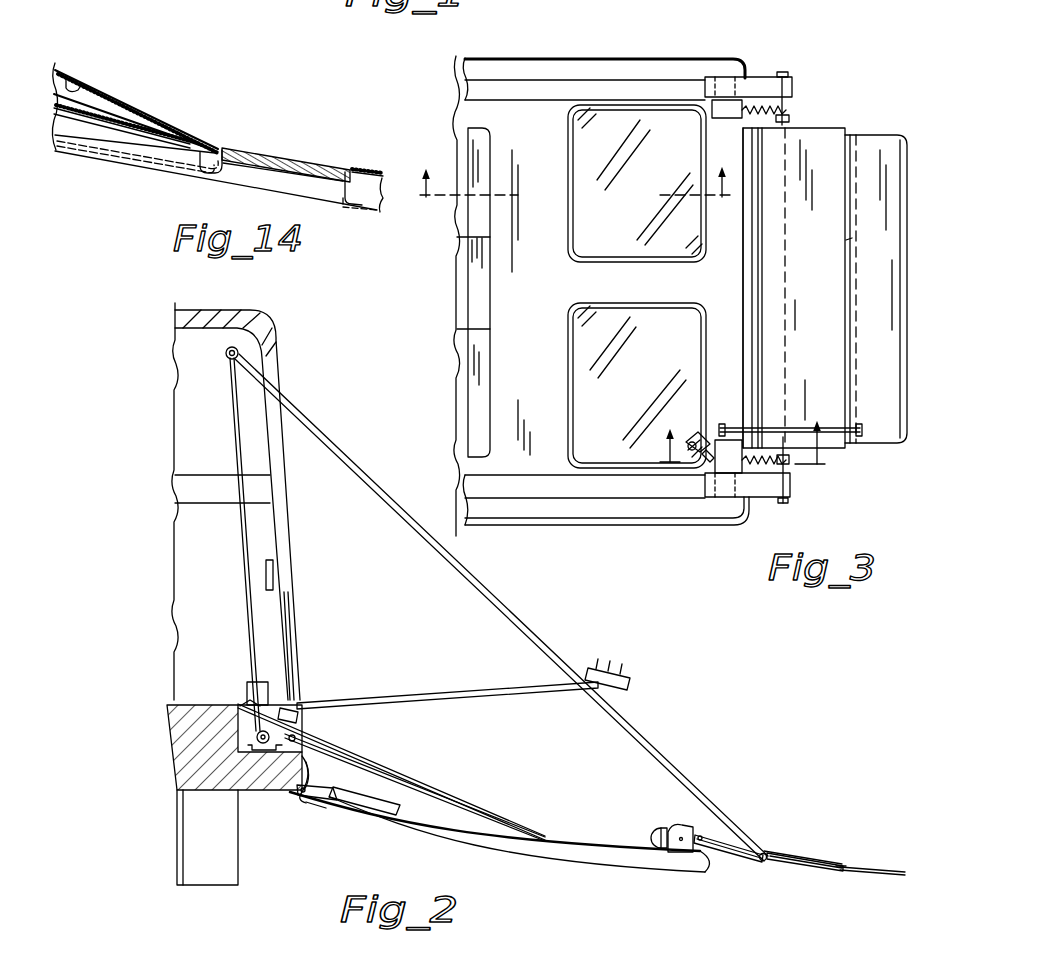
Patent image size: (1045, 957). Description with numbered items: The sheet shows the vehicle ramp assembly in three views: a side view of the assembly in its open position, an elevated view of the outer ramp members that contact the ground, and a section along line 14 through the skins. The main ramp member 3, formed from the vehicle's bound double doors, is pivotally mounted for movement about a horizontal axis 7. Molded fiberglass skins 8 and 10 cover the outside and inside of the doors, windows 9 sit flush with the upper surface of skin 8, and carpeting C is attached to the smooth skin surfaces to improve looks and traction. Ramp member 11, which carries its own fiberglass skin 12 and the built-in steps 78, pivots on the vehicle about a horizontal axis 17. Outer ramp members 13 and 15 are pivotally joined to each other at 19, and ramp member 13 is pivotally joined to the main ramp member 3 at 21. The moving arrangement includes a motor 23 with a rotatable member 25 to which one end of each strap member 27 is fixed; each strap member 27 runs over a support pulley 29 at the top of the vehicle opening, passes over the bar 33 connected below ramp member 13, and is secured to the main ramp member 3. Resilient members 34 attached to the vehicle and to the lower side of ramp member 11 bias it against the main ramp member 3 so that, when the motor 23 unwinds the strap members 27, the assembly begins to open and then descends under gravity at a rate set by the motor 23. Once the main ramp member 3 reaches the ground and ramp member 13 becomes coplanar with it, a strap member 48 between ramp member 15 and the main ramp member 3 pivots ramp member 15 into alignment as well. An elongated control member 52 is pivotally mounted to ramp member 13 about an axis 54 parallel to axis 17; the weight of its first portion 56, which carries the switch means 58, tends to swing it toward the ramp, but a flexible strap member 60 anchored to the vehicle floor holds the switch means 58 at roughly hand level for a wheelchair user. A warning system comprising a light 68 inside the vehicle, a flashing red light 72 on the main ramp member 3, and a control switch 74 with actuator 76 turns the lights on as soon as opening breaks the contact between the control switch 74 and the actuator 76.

In FIG. 14, the main ramp member 3 is at (162, 188).
In FIG. 3, the main ramp member 3 is at (542, 336).
In FIG. 2, the main ramp member 3 is at (534, 852).
In FIG. 2, the axis 7 is at (296, 800).
In FIG. 14, the fiberglass skin 8 is at (198, 150).
In FIG. 3, the fiberglass skin 8 is at (744, 427).
In FIG. 14, the windows 9 is at (272, 158).
In FIG. 3, the windows 9 is at (650, 164).
In FIG. 14, the outer fiberglass skin 10 is at (132, 166).
In FIG. 2, the ramp member 11 is at (452, 796).
In FIG. 14, the fiberglass skin 12 is at (72, 82).
In FIG. 3, the outer ramp member 13 is at (829, 298).
In FIG. 2, the outer ramp member 13 is at (796, 864).
In FIG. 3, the line 14— 14 is at (576, 205).
In FIG. 3, the outer ramp member 15 is at (890, 336).
In FIG. 2, the outer ramp member 15 is at (880, 868).
In FIG. 2, the horizontal axis 17 is at (237, 707).
In FIG. 3, the pivot 19 is at (848, 240).
In FIG. 2, the pivot 19 is at (834, 868).
In FIG. 3, the pivot 21 is at (752, 166).
In FIG. 2, the pivot 21 is at (706, 860).
In FIG. 2, the motor 23 is at (207, 837).
In FIG. 2, the rotatable member 25 is at (256, 740).
In FIG. 3, the strap member 27 is at (622, 82).
In FIG. 2, the strap member 27 is at (330, 440).
In FIG. 2, the support pulley 29 is at (228, 358).
In FIG. 3, the bar 33 is at (790, 104).
In FIG. 2, the bar 33 is at (758, 864).
In FIG. 2, the resilient members 34 is at (318, 796).
In FIG. 3, the strap member 48 is at (800, 428).
In FIG. 2, the strap member 48 is at (834, 824).
In FIG. 2, the elongated control member 52 is at (372, 642).
In FIG. 2, the axis 54 is at (297, 714).
In FIG. 2, the first portion 56 is at (444, 696).
In FIG. 2, the switch means 58 is at (630, 680).
In FIG. 2, the flexible strap member 60 is at (232, 702).
In FIG. 2, the light 68 is at (276, 574).
In FIG. 3, the flashing red light 72 is at (696, 434).
In FIG. 2, the flashing red light 72 is at (656, 830).
In FIG. 2, the control switch 74 is at (278, 690).
In FIG. 2, the actuator 76 is at (404, 806).
In FIG. 2, the built-in steps 78 is at (398, 786).
In FIG. 14, the carpeting C is at (112, 106).